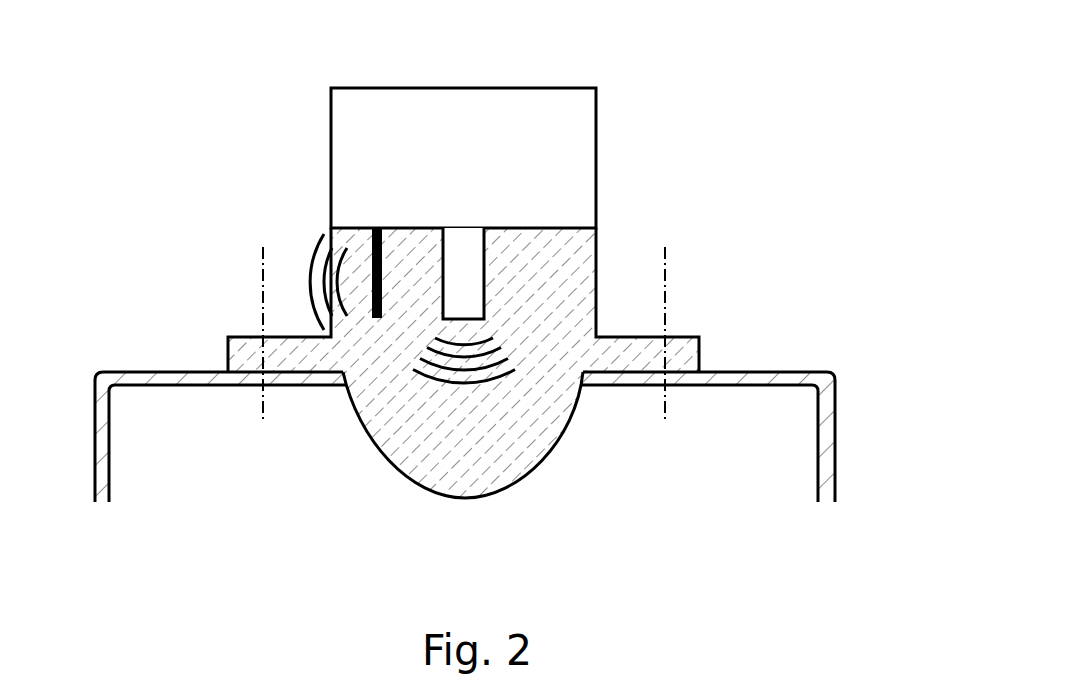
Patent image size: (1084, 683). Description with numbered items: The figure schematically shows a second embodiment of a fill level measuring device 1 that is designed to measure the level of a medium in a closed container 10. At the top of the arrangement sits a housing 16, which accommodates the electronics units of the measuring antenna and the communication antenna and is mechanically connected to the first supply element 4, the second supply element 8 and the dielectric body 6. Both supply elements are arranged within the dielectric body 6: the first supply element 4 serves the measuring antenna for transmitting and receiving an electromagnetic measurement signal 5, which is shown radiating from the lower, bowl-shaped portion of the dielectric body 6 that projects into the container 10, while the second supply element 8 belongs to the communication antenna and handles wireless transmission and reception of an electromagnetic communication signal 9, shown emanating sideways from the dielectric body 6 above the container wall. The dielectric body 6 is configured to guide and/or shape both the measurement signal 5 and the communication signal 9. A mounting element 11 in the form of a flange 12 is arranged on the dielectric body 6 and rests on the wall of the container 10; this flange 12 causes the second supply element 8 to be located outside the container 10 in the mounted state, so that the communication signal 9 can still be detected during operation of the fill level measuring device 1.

The fill level measuring device 1 is at (199, 71).
The first supply element 4 is at (484, 276).
The electromagnetic measurement signal 5 is at (507, 395).
The dielectric body 6 is at (570, 415).
The second supply element 8 is at (377, 320).
The electromagnetic communication signal 9 is at (308, 234).
The closed container 10 is at (792, 378).
The mounting element 11 is at (678, 347).
The flange 12 is at (237, 346).
The housing 16 is at (596, 142).